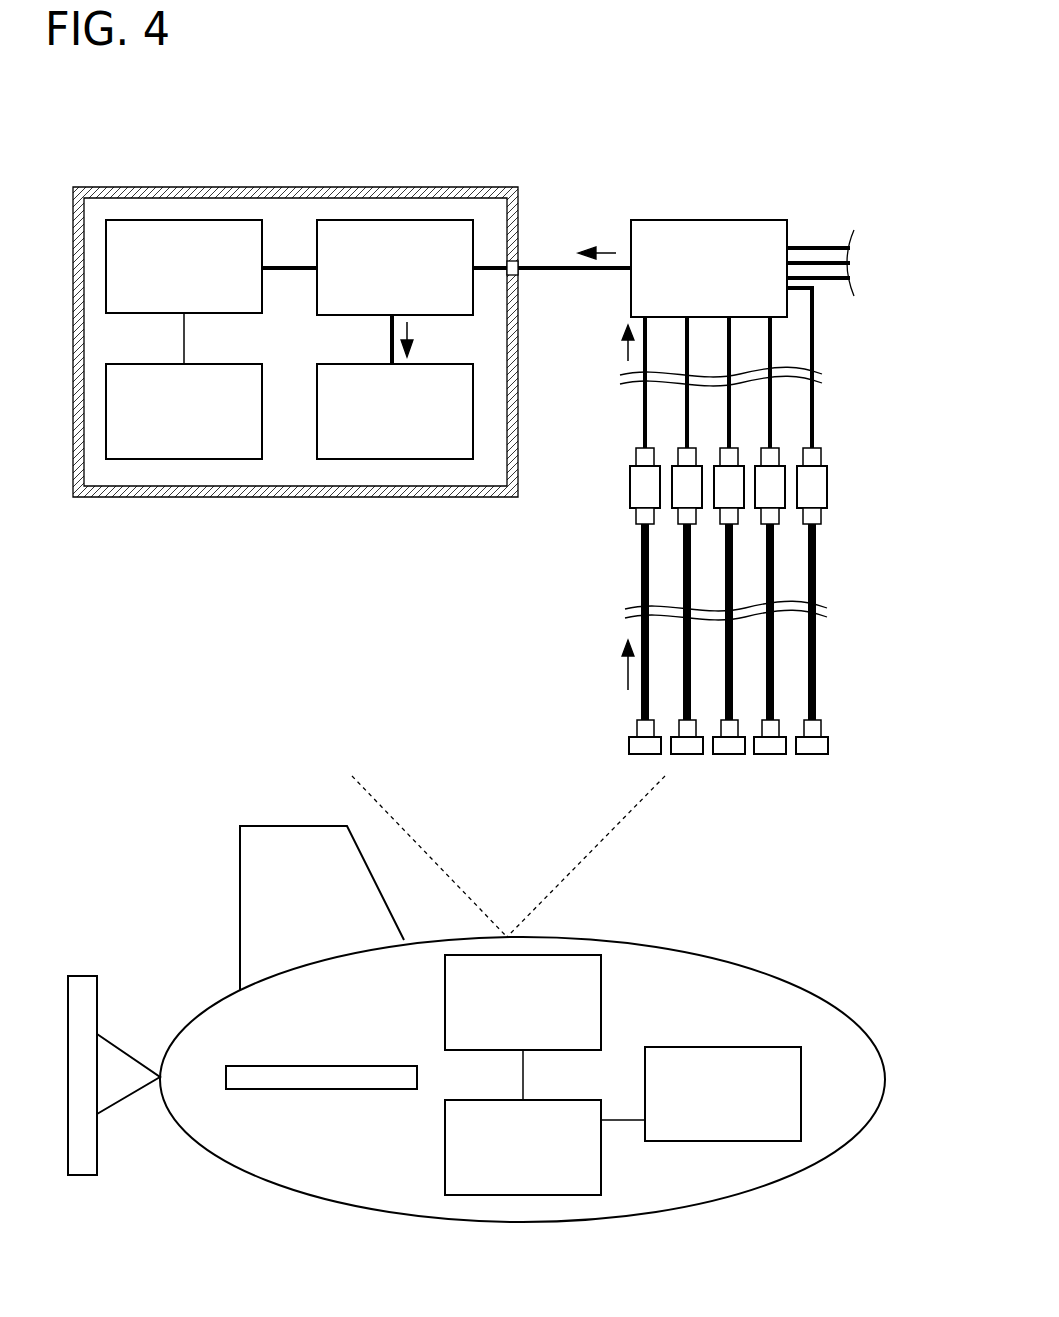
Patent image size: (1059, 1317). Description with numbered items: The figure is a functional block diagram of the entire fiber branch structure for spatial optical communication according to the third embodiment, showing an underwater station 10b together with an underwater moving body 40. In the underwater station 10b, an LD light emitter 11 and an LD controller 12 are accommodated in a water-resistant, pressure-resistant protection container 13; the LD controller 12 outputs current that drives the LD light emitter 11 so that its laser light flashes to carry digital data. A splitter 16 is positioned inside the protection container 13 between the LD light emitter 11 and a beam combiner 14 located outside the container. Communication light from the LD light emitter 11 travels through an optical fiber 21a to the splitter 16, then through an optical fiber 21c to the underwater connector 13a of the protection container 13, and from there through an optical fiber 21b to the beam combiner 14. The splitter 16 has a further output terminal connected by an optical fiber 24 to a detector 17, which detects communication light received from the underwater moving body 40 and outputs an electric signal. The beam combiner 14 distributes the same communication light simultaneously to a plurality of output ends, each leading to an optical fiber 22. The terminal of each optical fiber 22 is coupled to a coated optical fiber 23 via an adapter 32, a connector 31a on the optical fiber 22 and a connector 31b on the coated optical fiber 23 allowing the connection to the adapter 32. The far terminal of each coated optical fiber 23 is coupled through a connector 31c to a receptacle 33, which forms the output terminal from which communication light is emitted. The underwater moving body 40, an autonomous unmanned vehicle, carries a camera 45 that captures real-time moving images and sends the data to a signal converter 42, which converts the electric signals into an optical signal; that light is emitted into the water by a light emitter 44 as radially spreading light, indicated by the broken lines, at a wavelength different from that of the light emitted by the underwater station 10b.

The underwater station 10b is at (112, 152).
The LD light emitter 11 is at (106, 272).
The LD controller 12 is at (106, 420).
The protection container 13 is at (204, 186).
The underwater connector 13a is at (520, 250).
The beam combiner 14 is at (704, 220).
The splitter 16 is at (398, 220).
The detector 17 is at (390, 488).
The optical fiber 21a is at (296, 280).
The optical fiber 21b is at (576, 280).
The optical fiber 21c is at (491, 262).
The optical fiber 22 is at (641, 409).
The coated optical fiber 23 is at (640, 571).
The optical fiber 24 is at (392, 342).
The connector 31a is at (634, 463).
The connector 31b is at (634, 520).
The connector 31c is at (634, 730).
The adapter 32 is at (630, 492).
The receptacle 33 is at (628, 751).
The underwater moving body 40 is at (170, 850).
The signal converter 42 is at (445, 1161).
The light emitter 44 is at (445, 1009).
The camera 45 is at (700, 1047).